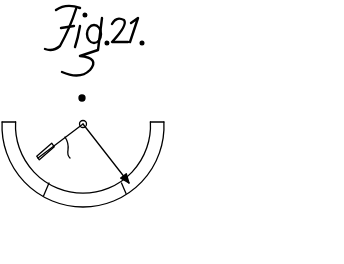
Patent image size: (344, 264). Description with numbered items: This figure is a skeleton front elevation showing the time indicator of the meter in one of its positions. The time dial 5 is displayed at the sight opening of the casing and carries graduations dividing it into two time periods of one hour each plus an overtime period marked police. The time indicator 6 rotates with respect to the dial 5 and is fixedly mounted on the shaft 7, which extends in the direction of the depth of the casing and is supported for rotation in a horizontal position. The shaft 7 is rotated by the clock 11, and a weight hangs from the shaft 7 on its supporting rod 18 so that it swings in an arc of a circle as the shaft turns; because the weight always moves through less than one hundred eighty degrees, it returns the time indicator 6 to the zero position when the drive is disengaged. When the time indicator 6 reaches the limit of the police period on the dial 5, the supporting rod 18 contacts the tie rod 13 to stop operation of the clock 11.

The time dial 5 is at (75, 195).
The time indicator 6 is at (112, 159).
The shaft 7 is at (87, 122).
The clock 11 is at (50, 147).
The tie rod 13 is at (87, 98).
The angle indication 18 is at (77, 157).